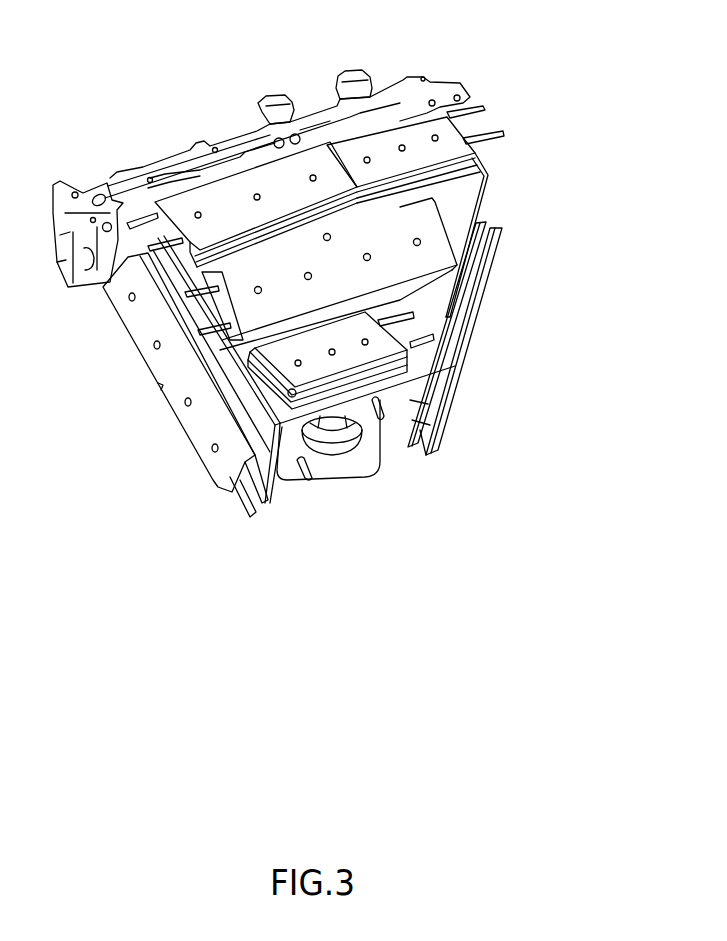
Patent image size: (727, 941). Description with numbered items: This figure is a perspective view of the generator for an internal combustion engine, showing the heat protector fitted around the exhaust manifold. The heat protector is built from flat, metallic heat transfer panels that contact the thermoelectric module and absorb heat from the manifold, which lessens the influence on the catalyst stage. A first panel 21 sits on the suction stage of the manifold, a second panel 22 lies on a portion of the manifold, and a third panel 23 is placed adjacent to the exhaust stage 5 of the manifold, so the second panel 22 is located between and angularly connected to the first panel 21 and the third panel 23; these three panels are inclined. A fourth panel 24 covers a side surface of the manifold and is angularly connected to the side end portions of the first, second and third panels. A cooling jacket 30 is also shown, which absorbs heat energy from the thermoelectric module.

The cooling jacket 30 is at (407, 135).
The first panel 21 is at (488, 175).
The second panel 22 is at (472, 190).
The third panel 23 is at (433, 318).
The fourth panel 24 is at (173, 273).
The exhaust stage 5 is at (362, 460).